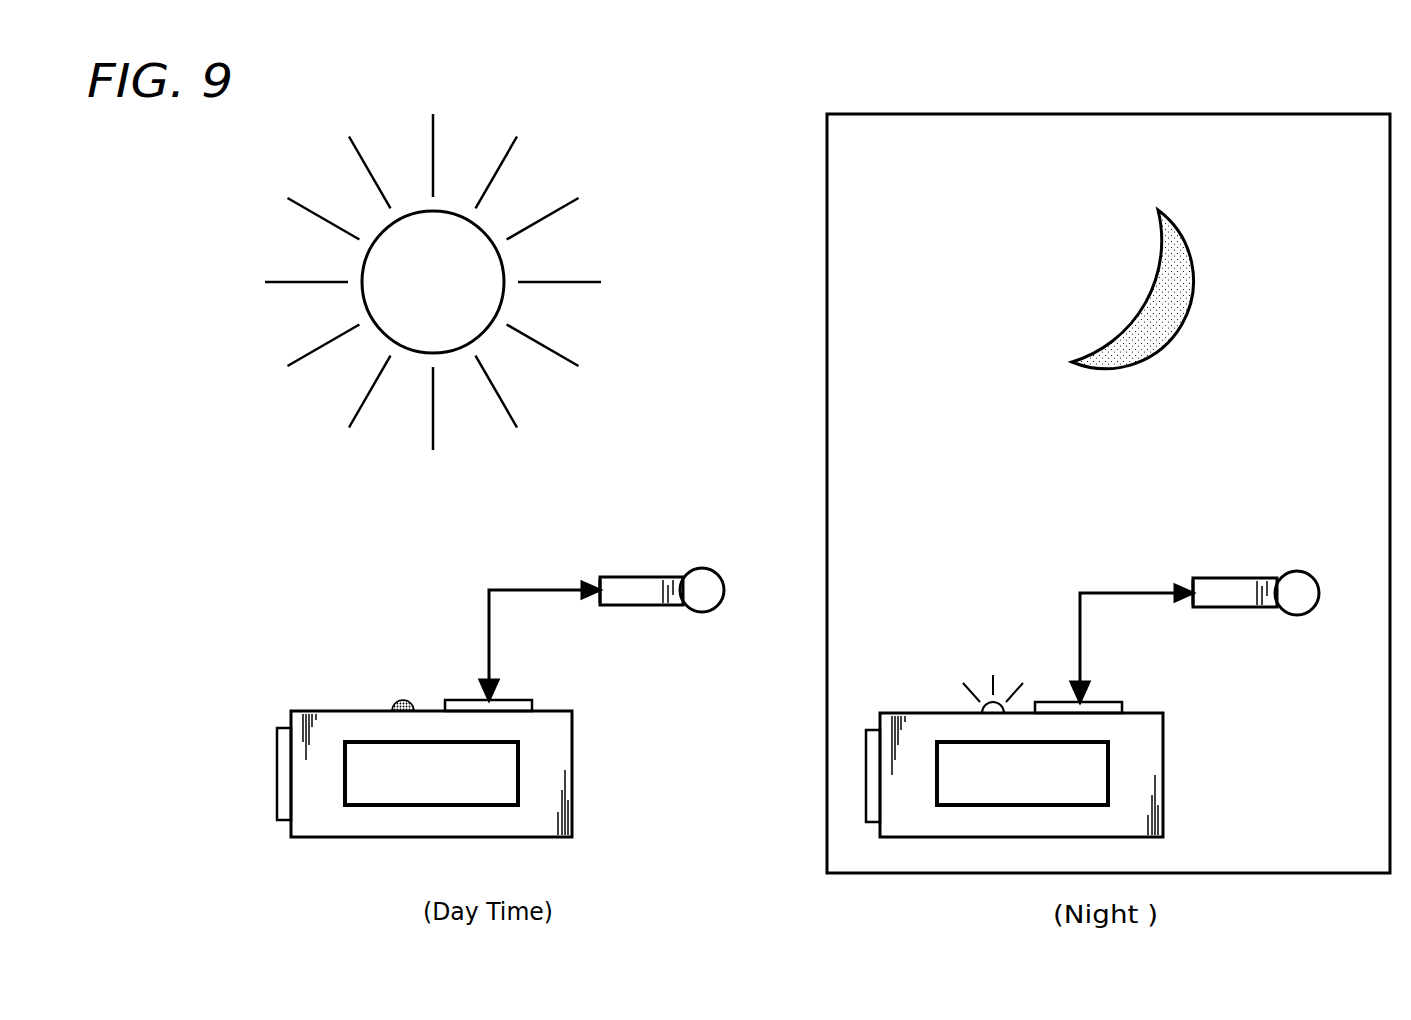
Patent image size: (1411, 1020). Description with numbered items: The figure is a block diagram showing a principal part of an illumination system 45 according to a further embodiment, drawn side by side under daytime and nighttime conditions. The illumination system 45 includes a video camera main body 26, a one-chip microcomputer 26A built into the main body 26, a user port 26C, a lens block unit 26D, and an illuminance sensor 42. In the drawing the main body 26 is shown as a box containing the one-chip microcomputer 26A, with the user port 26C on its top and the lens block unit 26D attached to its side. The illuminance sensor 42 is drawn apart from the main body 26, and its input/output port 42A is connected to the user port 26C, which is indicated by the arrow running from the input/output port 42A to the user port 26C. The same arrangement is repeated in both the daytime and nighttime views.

The illumination system 45 is at (477, 534).
The illuminance sensor 42 is at (648, 577).
The input/output port 42A is at (598, 580).
The video camera main body 26 is at (575, 817).
The one-chip microcomputer 26A is at (478, 757).
The user port 26C is at (516, 700).
The lens block unit 26D is at (287, 821).